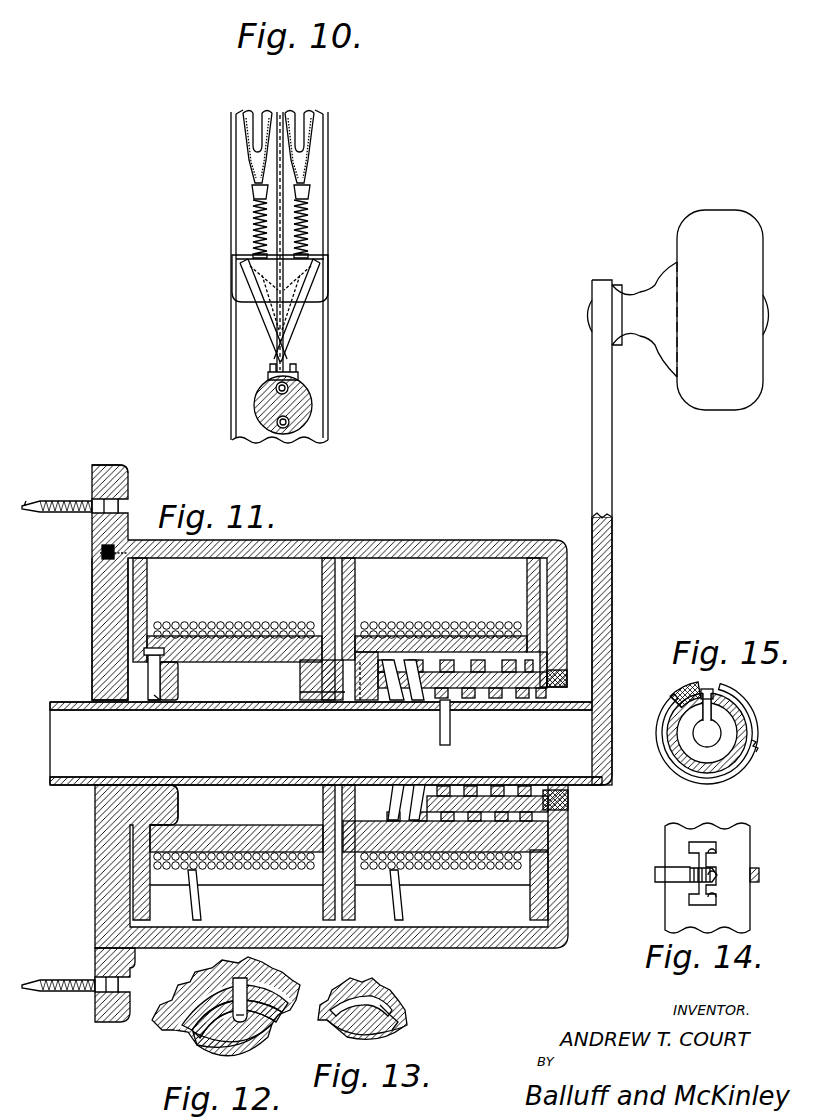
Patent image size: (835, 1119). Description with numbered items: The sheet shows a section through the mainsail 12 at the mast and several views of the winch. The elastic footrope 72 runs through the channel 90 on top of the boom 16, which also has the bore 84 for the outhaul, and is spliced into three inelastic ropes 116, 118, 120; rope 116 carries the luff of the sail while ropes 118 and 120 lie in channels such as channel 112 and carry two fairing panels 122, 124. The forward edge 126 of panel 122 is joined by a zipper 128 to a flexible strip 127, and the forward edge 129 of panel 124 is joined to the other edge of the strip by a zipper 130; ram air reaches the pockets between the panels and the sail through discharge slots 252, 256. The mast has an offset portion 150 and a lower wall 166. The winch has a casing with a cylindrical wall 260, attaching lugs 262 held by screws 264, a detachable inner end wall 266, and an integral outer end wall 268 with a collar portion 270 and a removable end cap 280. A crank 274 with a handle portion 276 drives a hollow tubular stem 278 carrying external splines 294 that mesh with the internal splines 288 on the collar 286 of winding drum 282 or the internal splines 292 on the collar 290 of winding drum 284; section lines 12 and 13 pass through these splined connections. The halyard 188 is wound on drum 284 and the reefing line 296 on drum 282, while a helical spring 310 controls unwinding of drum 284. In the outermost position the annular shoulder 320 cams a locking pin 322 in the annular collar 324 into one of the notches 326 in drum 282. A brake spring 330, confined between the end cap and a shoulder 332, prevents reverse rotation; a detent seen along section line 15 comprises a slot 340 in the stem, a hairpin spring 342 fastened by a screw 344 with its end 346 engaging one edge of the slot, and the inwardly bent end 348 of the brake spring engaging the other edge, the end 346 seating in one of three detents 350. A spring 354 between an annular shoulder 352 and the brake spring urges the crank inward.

In FIG. 11, the mainsail 12 is at (160, 700).
In FIG. 11, the section line 13- 13 is at (343, 655).
In FIG. 14, the section line 15- 15 is at (782, 882).
In FIG. 10, the boom 16 is at (254, 404).
In FIG. 10, the footrope 72 is at (308, 400).
In FIG. 10, the bore 84 is at (290, 420).
In FIG. 10, the channel 90 is at (296, 382).
In FIG. 10, the channel 112 is at (284, 188).
In FIG. 10, the rope 116 is at (284, 282).
In FIG. 10, the rope 118 is at (255, 282).
In FIG. 10, the rope 120 is at (305, 289).
In FIG. 10, the fairing panel 122 is at (236, 223).
In FIG. 10, the fairing panel 124 is at (325, 223).
In FIG. 10, the forward edge 126 is at (243, 132).
In FIG. 10, the flexible strip 127 is at (276, 122).
In FIG. 10, the zipper 128 is at (255, 192).
In FIG. 10, the forward edge 129 is at (312, 186).
In FIG. 10, the zipper 130 is at (304, 192).
In FIG. 10, the offset portion 150 is at (308, 348).
In FIG. 10, the lower wall 166 is at (318, 300).
In FIG. 11, the halyard 188 is at (403, 622).
In FIG. 10, the discharge slot 252 is at (300, 124).
In FIG. 10, the discharge slot 256 is at (257, 110).
In FIG. 11, the cylindrical wall 260 is at (378, 538).
In FIG. 11, the attaching lugs 262 is at (93, 466).
In FIG. 11, the screws 264 is at (60, 500).
In FIG. 11, the inner end wall 266 is at (90, 600).
In FIG. 11, the outer end wall 268 is at (568, 914).
In FIG. 11, the collar portion 270 is at (518, 800).
In FIG. 11, the crank 274 is at (616, 614).
In FIG. 11, the handle portion 276 is at (612, 414).
In FIG. 11, the tubular stem 278 is at (262, 705).
In FIG. 12, the tubular stem 278 is at (222, 1052).
In FIG. 13, the tubular stem 278 is at (368, 1043).
In FIG. 14, the tubular stem 278 is at (670, 918).
In FIG. 15, the tubular stem 278 is at (746, 722).
In FIG. 11, the end cap 280 is at (570, 678).
In FIG. 11, the winding drum 282 is at (270, 640).
In FIG. 12, the winding drum 282 is at (192, 988).
In FIG. 11, the winding drum 284 is at (425, 640).
In FIG. 11, the collar 286 is at (305, 675).
In FIG. 11, the internal splines 288 is at (300, 693).
In FIG. 11, the collar 290 is at (445, 706).
In FIG. 13, the collar 290 is at (362, 988).
In FIG. 11, the internal splines 292 is at (365, 702).
In FIG. 13, the internal splines 292 is at (393, 1030).
In FIG. 11, the external splines 294 is at (345, 704).
In FIG. 13, the external splines 294 is at (348, 1022).
In FIG. 11, the reefing line 296 is at (232, 622).
In FIG. 11, the helical spring 310 is at (530, 816).
In FIG. 11, the annular shoulder 320 is at (138, 700).
In FIG. 12, the annular shoulder 320 is at (205, 1048).
In FIG. 11, the locking pin 322 is at (150, 700).
In FIG. 12, the locking pin 322 is at (243, 1022).
In FIG. 11, the annular collar 324 is at (178, 812).
In FIG. 12, the annular collar 324 is at (185, 1045).
In FIG. 12, the notches 326 is at (266, 983).
In FIG. 11, the brake spring 330 is at (505, 705).
In FIG. 14, the brake spring 330 is at (660, 866).
In FIG. 15, the brake spring 330 is at (756, 752).
In FIG. 11, the shoulder 332 is at (437, 790).
In FIG. 14, the slot 340 is at (700, 905).
In FIG. 14, the hairpin spring 342 is at (692, 886).
In FIG. 15, the hairpin spring 342 is at (722, 733).
In FIG. 15, the screw 344 is at (711, 695).
In FIG. 15, the end 346 is at (714, 705).
In FIG. 15, the end 348 is at (690, 703).
In FIG. 14, the detents 350 is at (716, 898).
In FIG. 11, the annular shoulder 352 is at (393, 788).
In FIG. 11, the spring 354 is at (425, 762).